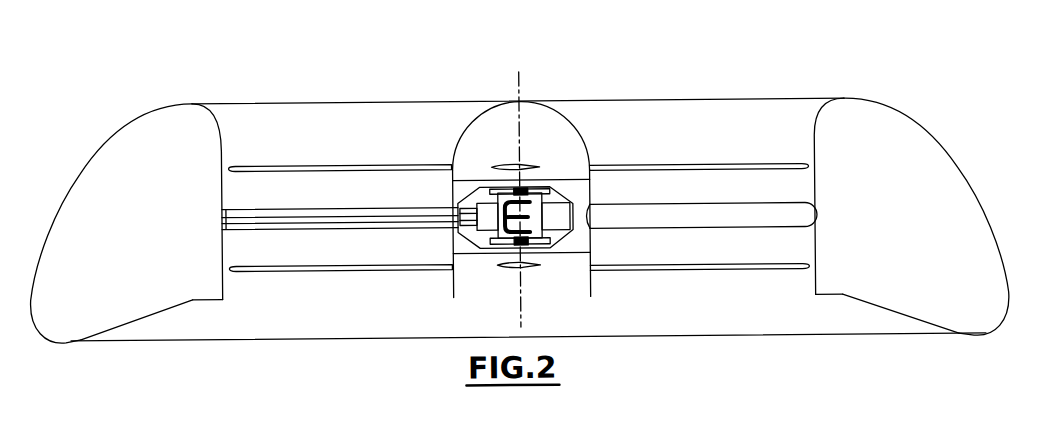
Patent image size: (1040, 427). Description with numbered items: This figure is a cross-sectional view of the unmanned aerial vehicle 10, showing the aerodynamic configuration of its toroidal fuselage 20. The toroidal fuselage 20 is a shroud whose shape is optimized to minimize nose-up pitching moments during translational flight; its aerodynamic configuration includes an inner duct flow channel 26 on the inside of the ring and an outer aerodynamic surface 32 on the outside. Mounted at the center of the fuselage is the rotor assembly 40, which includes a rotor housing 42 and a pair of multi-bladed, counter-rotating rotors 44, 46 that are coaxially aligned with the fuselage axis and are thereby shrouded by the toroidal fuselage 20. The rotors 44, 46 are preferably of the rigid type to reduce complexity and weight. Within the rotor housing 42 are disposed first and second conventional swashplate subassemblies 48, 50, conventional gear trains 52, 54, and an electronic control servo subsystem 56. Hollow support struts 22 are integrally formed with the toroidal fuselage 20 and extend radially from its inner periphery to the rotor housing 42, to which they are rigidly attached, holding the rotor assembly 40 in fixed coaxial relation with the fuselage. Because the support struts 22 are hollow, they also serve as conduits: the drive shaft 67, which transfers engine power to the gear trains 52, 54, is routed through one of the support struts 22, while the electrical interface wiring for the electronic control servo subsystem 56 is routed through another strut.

The unmanned aerial vehicle 10 is at (727, 70).
The toroidal fuselage 20 is at (229, 96).
The support struts 22 is at (714, 218).
The inner duct flow channel 26 is at (819, 116).
The outer aerodynamic surface 32 is at (952, 143).
The rotor assembly 40 is at (555, 97).
The rotor housing 42 is at (573, 150).
The rotor 44 is at (350, 163).
The rotor 46 is at (358, 271).
The first swashplate subassembly 48 is at (502, 249).
The second swashplate subassembly 50 is at (512, 190).
The gear train 52 is at (547, 243).
The gear train 54 is at (493, 190).
The electronic control servo subsystem 56 is at (562, 215).
The drive shaft 67 is at (290, 213).